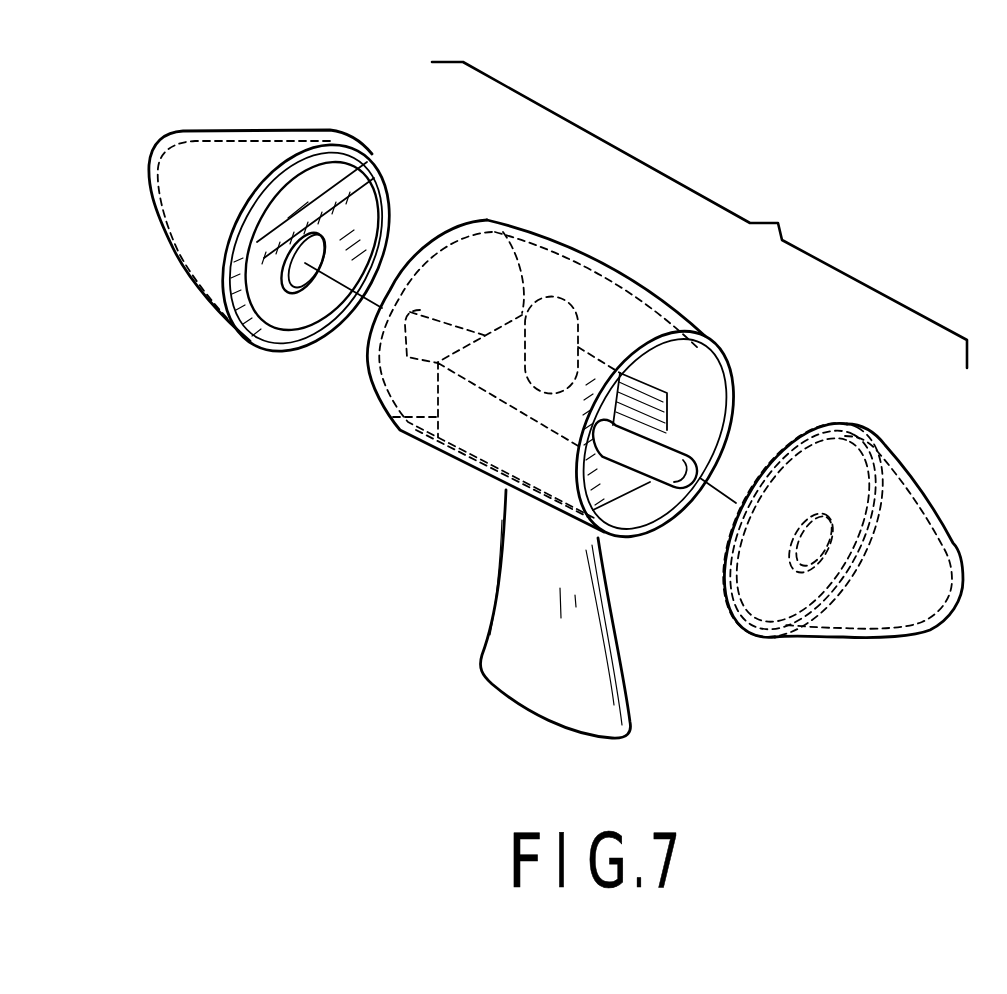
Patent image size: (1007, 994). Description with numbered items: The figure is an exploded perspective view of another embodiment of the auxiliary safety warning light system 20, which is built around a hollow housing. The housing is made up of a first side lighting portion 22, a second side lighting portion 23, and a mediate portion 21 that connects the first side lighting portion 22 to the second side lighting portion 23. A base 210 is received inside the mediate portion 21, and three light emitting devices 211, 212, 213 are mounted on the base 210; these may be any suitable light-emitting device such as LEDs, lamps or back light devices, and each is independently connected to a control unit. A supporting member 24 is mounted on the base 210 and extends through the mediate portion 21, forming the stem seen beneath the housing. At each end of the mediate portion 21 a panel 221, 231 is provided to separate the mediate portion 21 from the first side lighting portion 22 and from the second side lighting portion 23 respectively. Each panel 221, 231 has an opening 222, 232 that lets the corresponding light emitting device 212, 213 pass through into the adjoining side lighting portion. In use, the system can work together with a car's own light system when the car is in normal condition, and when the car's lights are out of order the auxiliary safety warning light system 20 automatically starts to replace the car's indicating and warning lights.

The auxiliary safety warning light system 20 is at (699, 215).
The mediate portion 21 is at (652, 288).
The base 210 is at (485, 455).
The light emitting device 211 is at (542, 307).
The light emitting device 212 is at (410, 352).
The light emitting device 213 is at (673, 460).
The first side lighting portion 22 is at (233, 145).
The panel 221 is at (353, 198).
The opening 222 is at (308, 266).
The second side lighting portion 23 is at (925, 484).
The panel 231 is at (840, 447).
The opening 232 is at (806, 567).
The supporting member 24 is at (498, 660).